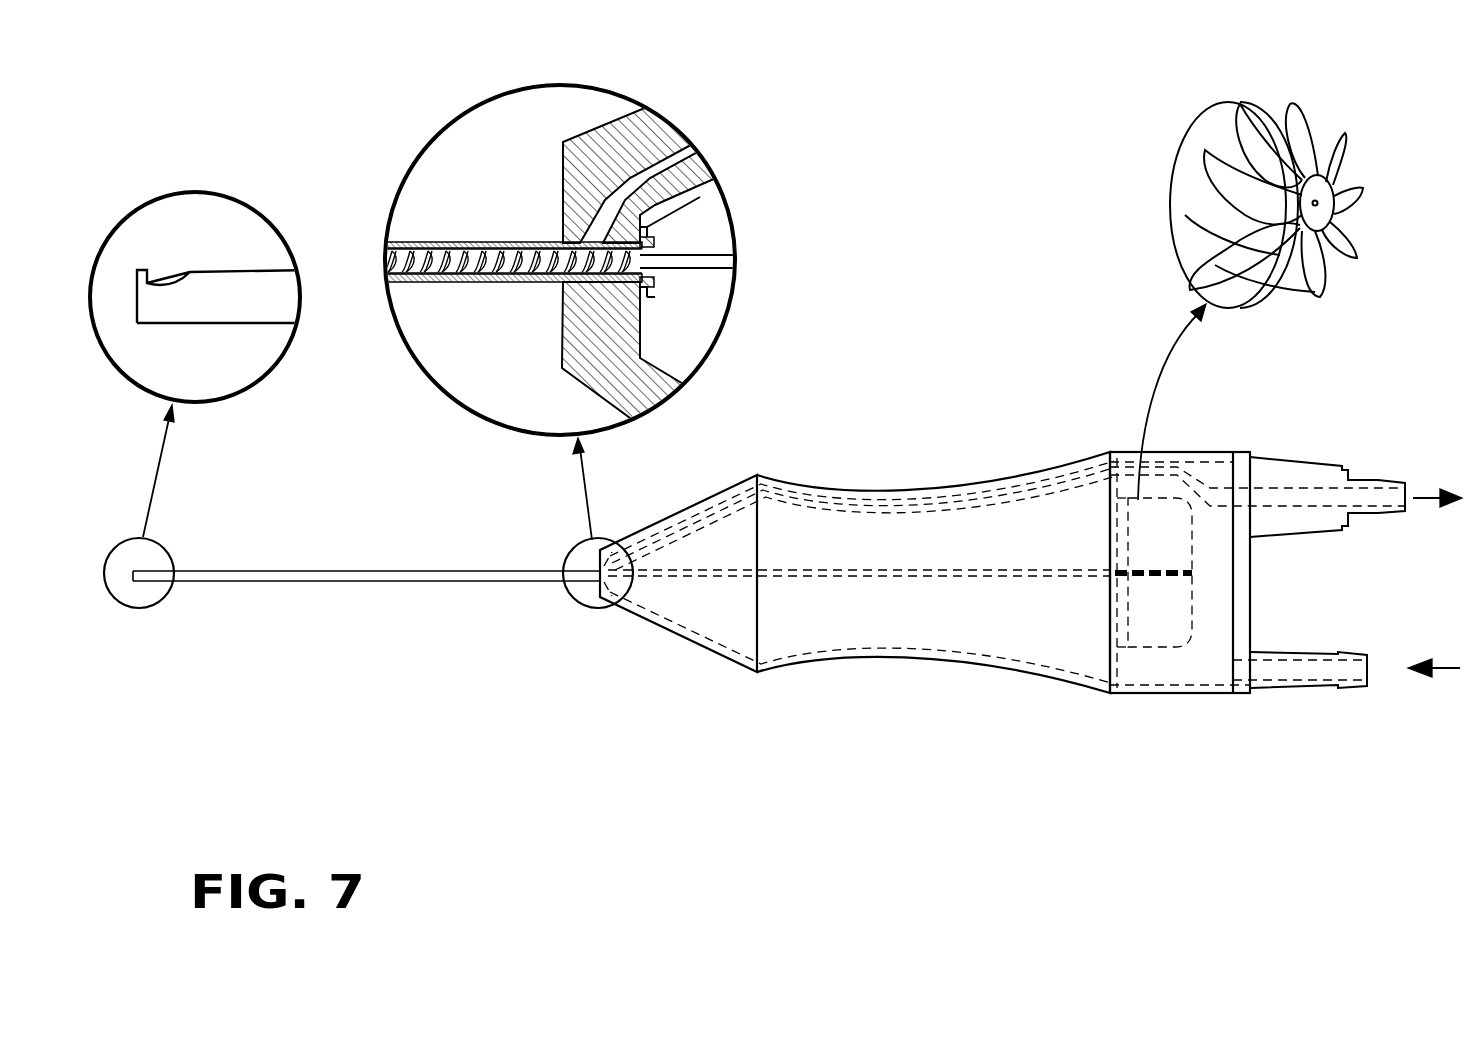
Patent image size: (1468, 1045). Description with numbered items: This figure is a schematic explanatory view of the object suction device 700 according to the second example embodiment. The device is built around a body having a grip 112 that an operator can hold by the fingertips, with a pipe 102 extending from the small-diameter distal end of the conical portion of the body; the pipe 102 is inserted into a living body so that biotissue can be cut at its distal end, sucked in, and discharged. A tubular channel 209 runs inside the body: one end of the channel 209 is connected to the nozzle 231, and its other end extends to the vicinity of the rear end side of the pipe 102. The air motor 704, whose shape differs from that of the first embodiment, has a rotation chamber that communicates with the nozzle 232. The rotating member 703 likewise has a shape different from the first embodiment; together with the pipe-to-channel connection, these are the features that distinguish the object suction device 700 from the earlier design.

The object suction device 700 is at (810, 733).
The grip 112 is at (985, 486).
The pipe 102 is at (450, 571).
The channel 209 is at (713, 203).
The rotating member 703 is at (682, 262).
The air motor 704 is at (1210, 108).
The nozzle 231 is at (1395, 478).
The nozzle 232 is at (1315, 690).